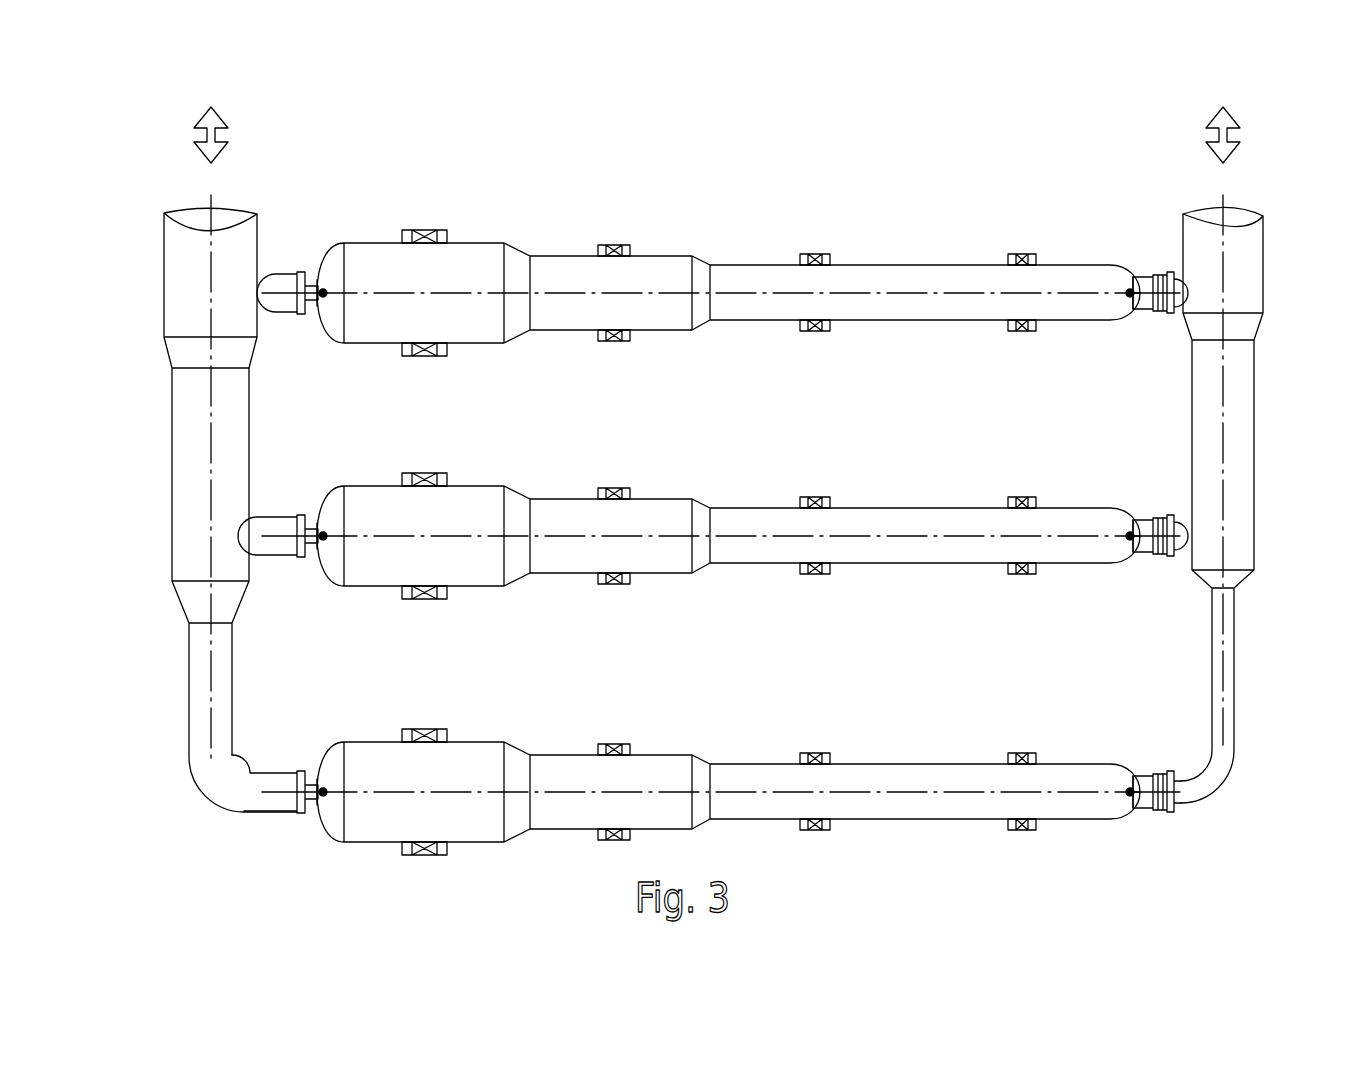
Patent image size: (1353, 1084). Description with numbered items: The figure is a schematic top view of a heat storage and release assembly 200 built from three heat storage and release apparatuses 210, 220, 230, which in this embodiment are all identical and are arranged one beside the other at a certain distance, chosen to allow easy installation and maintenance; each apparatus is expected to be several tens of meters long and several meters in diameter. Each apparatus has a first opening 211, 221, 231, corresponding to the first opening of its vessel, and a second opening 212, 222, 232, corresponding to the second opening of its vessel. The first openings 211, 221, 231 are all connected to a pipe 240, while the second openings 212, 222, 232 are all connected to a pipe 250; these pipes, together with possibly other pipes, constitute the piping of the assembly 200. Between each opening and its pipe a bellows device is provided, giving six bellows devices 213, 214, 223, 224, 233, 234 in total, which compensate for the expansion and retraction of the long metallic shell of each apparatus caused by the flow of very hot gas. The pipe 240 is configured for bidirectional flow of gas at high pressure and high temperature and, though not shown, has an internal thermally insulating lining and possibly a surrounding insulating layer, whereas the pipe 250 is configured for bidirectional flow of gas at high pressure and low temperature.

The heat storage and release assembly 200 is at (684, 156).
The heat storage and release apparatus 210 is at (868, 290).
The first opening 211 is at (323, 293).
The second opening 212 is at (1130, 293).
The bellows device 213 is at (272, 293).
The bellows device 214 is at (1152, 290).
The heat storage and release apparatus 220 is at (728, 499).
The first opening 221 is at (329, 479).
The second opening 222 is at (1122, 480).
The bellows device 223 is at (303, 577).
The bellows device 224 is at (1121, 576).
The heat storage and release apparatus 230 is at (728, 755).
The first opening 231 is at (329, 735).
The second opening 232 is at (1122, 736).
The bellows device 233 is at (300, 825).
The bellows device 234 is at (1118, 832).
The pipe 240 is at (187, 498).
The pipe 250 is at (1245, 475).